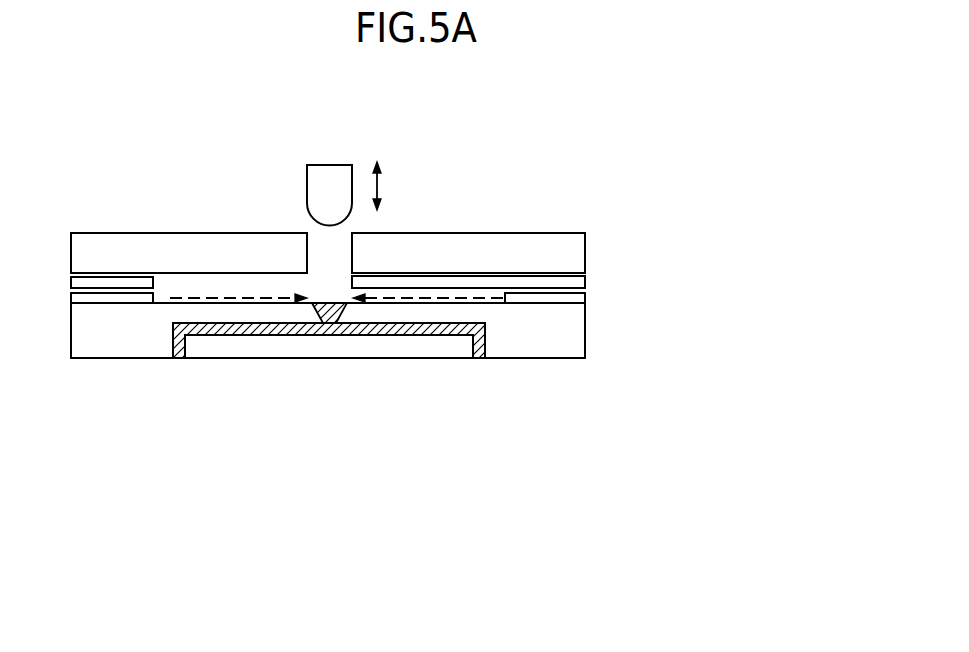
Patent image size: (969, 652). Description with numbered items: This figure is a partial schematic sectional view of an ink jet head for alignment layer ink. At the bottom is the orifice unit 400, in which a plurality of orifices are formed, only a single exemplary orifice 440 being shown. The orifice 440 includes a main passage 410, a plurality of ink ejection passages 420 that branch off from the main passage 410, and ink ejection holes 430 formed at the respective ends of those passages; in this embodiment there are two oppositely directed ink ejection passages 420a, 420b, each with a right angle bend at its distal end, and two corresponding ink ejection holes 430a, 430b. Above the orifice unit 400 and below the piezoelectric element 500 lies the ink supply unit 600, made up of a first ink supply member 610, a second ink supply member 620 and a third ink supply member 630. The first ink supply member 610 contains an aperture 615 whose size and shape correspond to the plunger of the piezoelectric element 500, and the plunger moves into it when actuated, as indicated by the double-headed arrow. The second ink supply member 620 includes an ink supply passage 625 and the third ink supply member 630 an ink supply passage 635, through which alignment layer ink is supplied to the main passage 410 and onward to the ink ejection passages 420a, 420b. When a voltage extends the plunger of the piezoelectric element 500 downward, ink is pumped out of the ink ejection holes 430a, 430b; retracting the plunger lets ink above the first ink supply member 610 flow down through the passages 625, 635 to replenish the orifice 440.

The orifice unit 400 is at (578, 345).
The main passage 410 is at (327, 303).
The ink ejection passages 420 is at (329, 380).
The first ink ejection passage 420a is at (275, 335).
The second ink ejection passage 420b is at (374, 369).
The ink ejection holes 430 is at (329, 452).
The first ink ejection hole 430a is at (180, 358).
The second ink ejection hole 430b is at (479, 358).
The orifice 440 is at (474, 362).
The piezoelectric element 500 is at (330, 168).
The ink supply unit 600 is at (423, 376).
The first ink supply member 610 is at (578, 253).
The aperture 615 is at (343, 240).
The second ink supply member 620 is at (578, 282).
The ink supply passage 625 is at (188, 285).
The third ink supply member 630 is at (578, 297).
The ink supply passage 635 is at (168, 297).